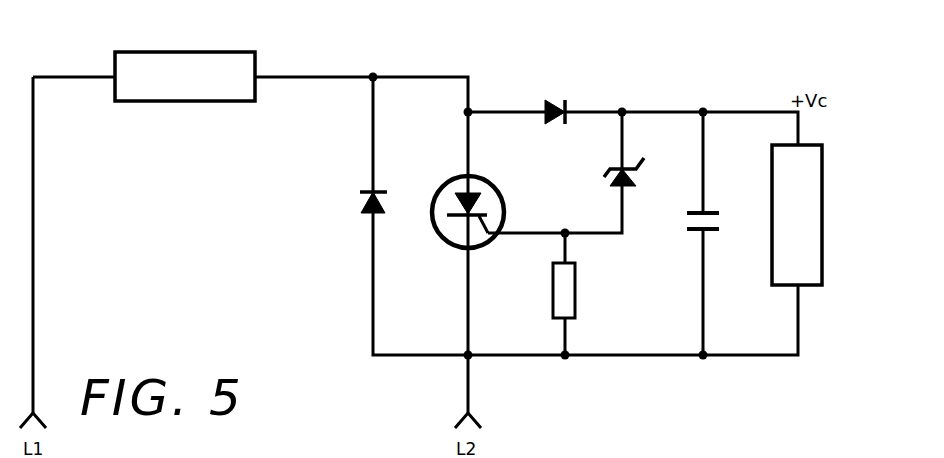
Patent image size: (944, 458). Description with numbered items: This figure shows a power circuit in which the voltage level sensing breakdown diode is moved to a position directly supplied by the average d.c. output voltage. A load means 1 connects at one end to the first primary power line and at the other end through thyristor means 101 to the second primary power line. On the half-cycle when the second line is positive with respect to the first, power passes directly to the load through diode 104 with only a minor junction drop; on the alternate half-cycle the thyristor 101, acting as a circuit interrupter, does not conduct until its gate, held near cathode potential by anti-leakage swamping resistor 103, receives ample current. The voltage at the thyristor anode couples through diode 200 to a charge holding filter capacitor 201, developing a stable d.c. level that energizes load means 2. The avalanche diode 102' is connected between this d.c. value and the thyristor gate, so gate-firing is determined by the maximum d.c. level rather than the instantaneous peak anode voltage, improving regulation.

The load means 1 is at (207, 62).
The load means 2 is at (808, 215).
The thyristor means 101 is at (458, 188).
The avalanche diode 102' is at (600, 165).
The anti-leakage swamping resistor 103 is at (563, 298).
The diode 104 is at (362, 205).
The diode 200 is at (570, 107).
The filter capacitor 201 is at (688, 222).